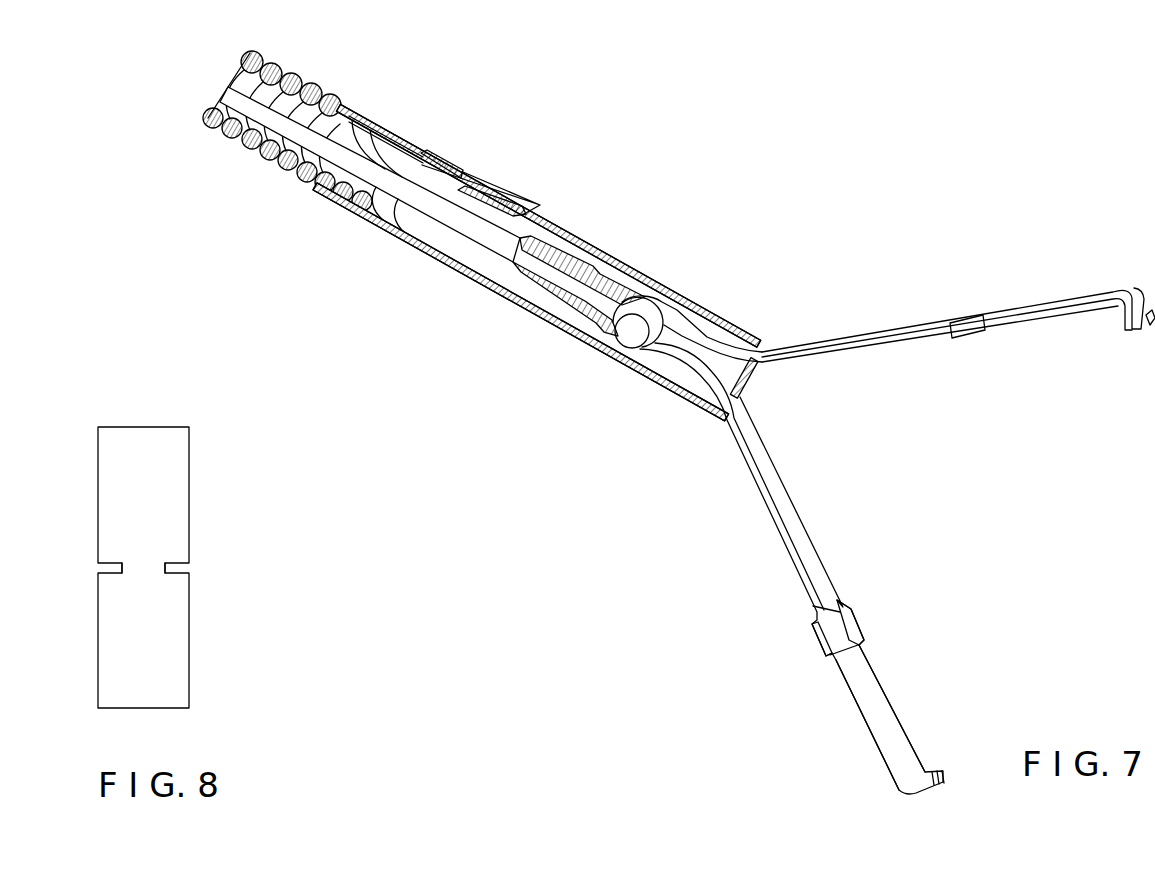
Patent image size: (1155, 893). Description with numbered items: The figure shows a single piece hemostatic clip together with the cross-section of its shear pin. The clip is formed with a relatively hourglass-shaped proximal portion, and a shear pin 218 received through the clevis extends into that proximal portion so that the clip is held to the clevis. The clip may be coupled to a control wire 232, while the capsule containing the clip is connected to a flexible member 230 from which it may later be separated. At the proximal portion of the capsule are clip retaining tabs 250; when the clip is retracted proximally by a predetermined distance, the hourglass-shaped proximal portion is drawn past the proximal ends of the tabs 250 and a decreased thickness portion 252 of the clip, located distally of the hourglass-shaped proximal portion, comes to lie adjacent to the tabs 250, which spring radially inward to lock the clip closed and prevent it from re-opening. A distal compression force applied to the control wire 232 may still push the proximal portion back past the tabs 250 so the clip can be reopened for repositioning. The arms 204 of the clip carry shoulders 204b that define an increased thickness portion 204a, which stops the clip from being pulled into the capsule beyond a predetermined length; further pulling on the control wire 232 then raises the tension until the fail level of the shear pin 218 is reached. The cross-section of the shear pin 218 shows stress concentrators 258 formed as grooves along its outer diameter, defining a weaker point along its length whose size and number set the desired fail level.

In FIG. 7, the arms 204 is at (893, 332).
In FIG. 7, the increased thickness portion 204a is at (893, 743).
In FIG. 7, the shoulders 204b is at (860, 633).
In FIG. 7, the shear pin 218 is at (626, 337).
In FIG. 8, the shear pin 218 is at (190, 670).
In FIG. 7, the flexible member 230 is at (250, 152).
In FIG. 7, the control wire 232 is at (510, 240).
In FIG. 7, the clip retaining tabs 250 is at (418, 170).
In FIG. 7, the decreased thickness portion 252 is at (707, 343).
In FIG. 8, the stress concentrators 258 is at (190, 568).